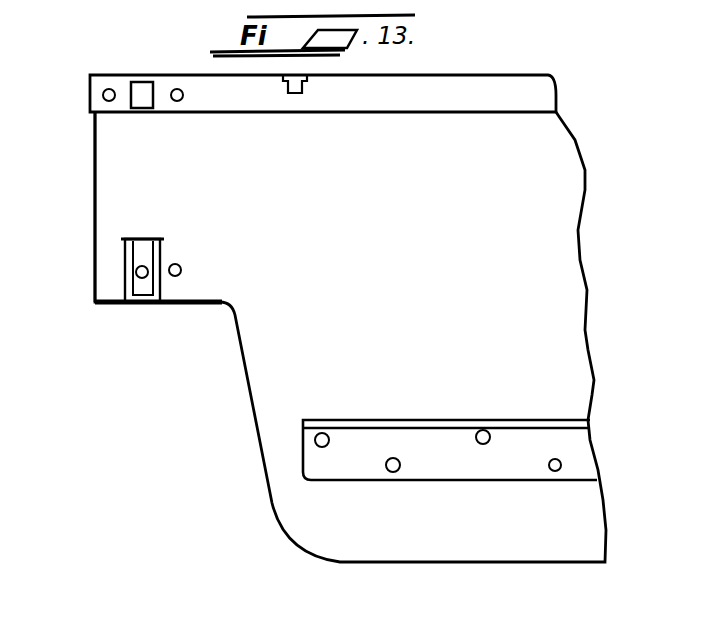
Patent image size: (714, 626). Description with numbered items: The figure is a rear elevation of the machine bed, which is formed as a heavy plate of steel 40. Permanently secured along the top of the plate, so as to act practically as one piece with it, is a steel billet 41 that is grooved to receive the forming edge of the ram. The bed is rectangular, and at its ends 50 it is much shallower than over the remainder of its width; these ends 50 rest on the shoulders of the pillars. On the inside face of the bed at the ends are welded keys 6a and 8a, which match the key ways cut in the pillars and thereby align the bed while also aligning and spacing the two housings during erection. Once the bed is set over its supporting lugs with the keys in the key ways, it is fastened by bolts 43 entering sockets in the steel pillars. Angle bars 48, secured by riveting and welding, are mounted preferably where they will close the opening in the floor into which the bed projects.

The heavy plate of steel 40 is at (350, 337).
The steel billet 41 is at (417, 93).
The bolts 43 is at (147, 268).
The angle bars 48 is at (407, 422).
The ends 50 is at (125, 170).
The welded key 6a is at (138, 100).
The welded key 8a is at (117, 305).